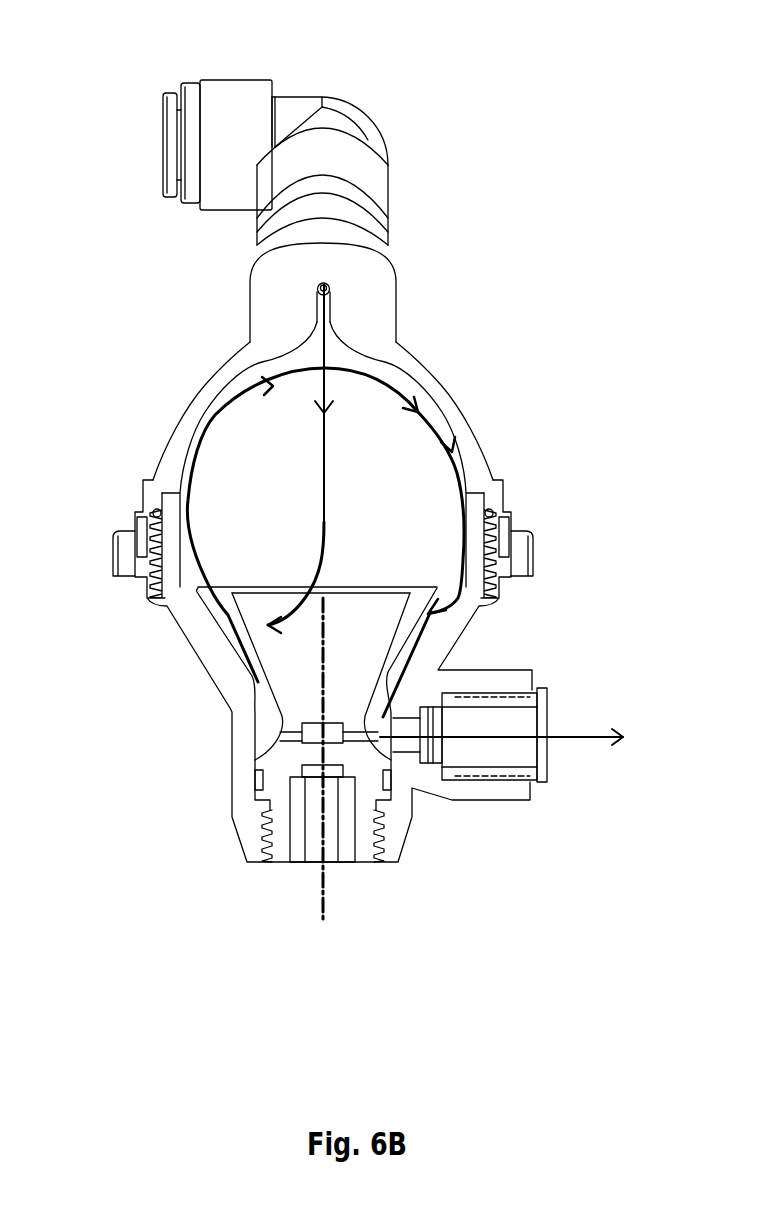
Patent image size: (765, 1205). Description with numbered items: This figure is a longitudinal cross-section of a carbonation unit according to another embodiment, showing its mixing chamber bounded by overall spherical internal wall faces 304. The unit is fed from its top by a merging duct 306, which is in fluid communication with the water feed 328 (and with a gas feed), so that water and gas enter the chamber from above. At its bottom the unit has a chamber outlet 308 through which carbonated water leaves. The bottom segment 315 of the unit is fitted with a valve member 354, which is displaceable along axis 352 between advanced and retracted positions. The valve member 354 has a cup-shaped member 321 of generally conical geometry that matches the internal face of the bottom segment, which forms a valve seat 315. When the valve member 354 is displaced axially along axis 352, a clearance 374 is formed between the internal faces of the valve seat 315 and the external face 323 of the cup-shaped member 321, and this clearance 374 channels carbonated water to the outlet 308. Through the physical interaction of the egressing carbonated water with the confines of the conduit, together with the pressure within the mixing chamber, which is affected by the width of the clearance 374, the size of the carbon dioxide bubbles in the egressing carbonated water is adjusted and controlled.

The water feed 328 is at (238, 98).
The merging duct 306 is at (317, 308).
The spherical internal wall faces 304 is at (418, 412).
The cup-shaped member 321 is at (217, 614).
The external face 323 is at (213, 637).
The clearance 374 is at (230, 660).
The valve member 354 is at (458, 603).
The bottom segment / valve seat 315 is at (432, 655).
The chamber outlet 308 is at (538, 757).
The axis 352 is at (320, 905).